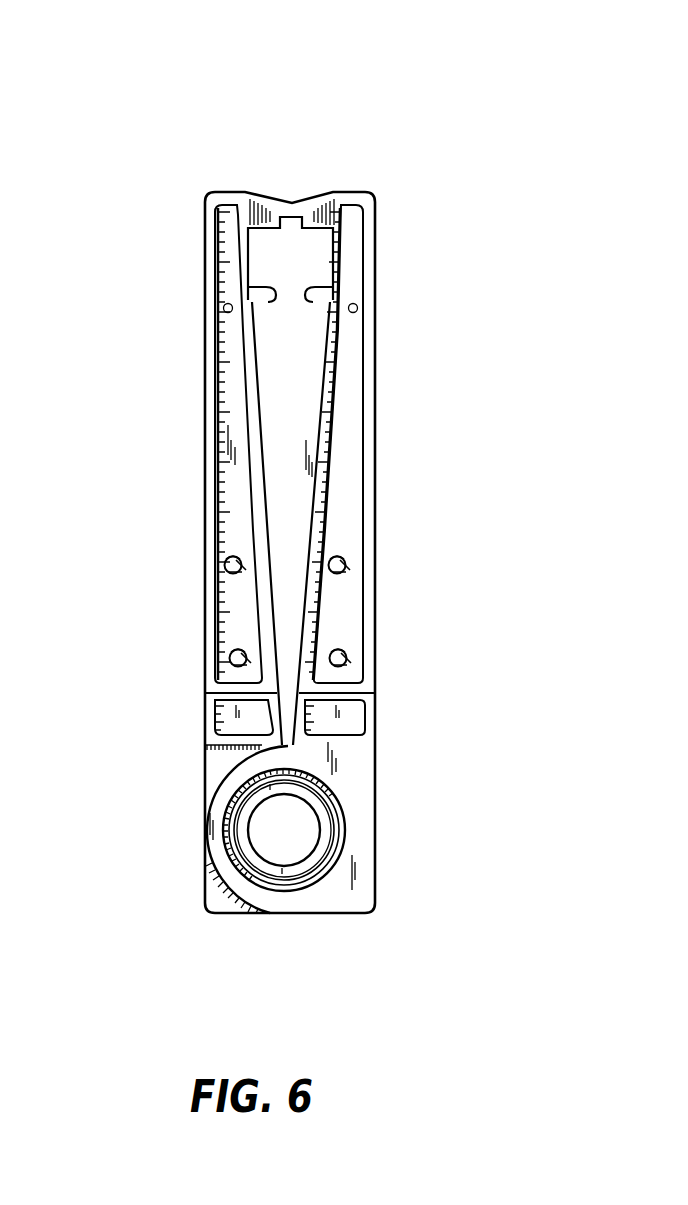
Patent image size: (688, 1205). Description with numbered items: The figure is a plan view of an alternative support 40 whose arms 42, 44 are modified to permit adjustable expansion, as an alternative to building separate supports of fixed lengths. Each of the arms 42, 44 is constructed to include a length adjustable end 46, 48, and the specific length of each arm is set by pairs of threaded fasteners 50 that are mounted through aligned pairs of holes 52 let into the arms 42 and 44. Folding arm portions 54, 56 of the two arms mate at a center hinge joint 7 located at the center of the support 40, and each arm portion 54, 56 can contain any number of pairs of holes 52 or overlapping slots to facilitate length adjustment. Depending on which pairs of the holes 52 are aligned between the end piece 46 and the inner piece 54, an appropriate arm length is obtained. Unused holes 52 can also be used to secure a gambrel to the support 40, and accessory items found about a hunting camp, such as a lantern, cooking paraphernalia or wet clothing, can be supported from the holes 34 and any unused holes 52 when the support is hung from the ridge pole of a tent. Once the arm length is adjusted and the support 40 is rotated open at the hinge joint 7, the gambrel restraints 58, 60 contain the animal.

The support 40 is at (322, 128).
The holes 34 is at (224, 306).
The arm 42 is at (197, 435).
The arm 44 is at (383, 435).
The length adjustable end 46 is at (205, 370).
The length adjustable end 48 is at (375, 375).
The threaded fasteners 50 is at (232, 652).
The holes 52 is at (230, 563).
The folding arm portion 54 is at (200, 737).
The folding arm portion 56 is at (372, 714).
The gambrel restraint 58 is at (266, 300).
The gambrel restraint 60 is at (258, 207).
The center hinge joint 7 is at (292, 205).